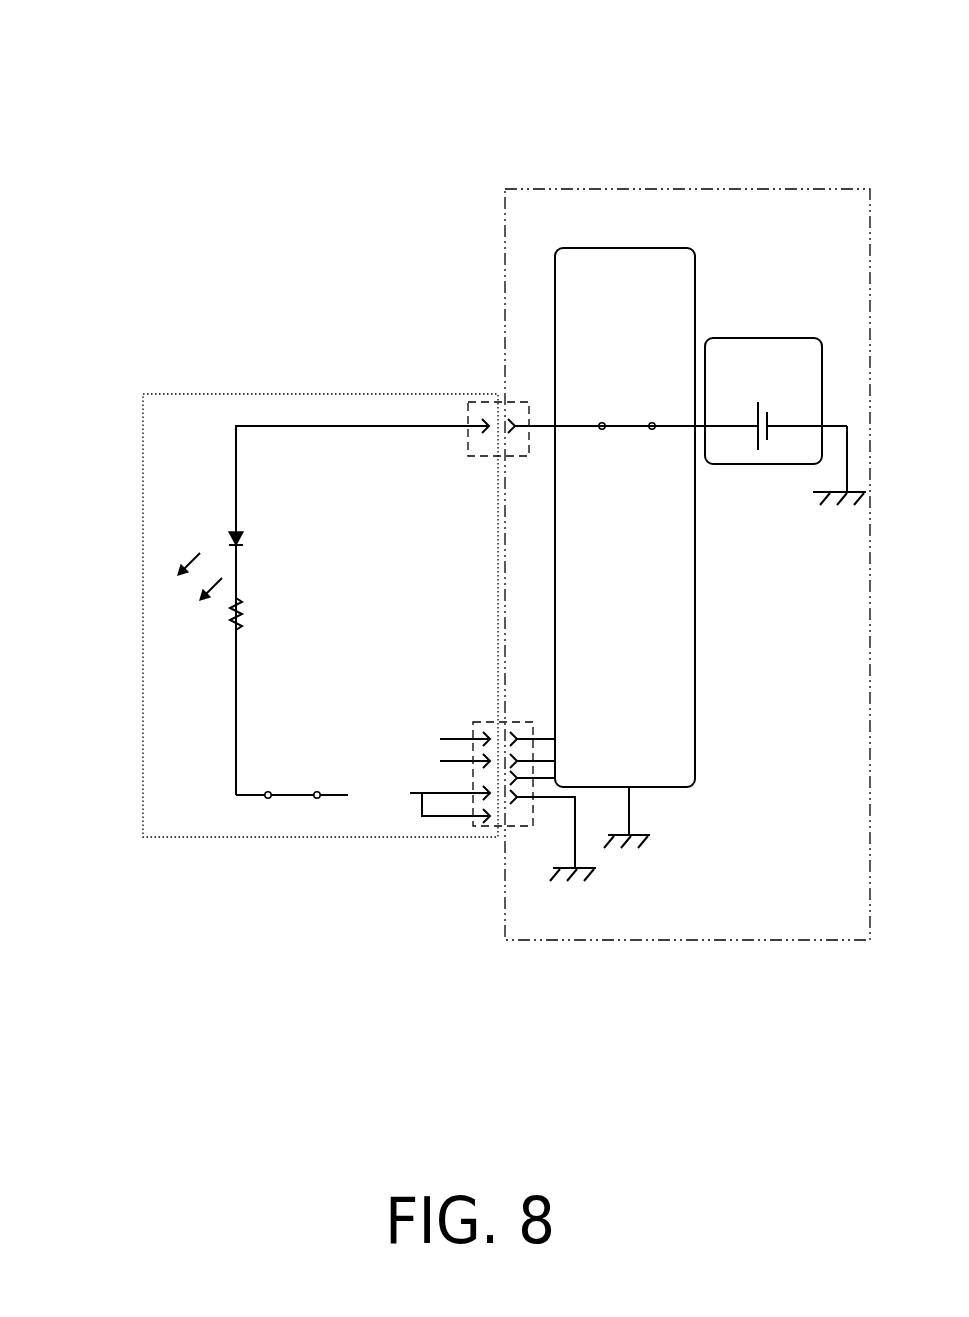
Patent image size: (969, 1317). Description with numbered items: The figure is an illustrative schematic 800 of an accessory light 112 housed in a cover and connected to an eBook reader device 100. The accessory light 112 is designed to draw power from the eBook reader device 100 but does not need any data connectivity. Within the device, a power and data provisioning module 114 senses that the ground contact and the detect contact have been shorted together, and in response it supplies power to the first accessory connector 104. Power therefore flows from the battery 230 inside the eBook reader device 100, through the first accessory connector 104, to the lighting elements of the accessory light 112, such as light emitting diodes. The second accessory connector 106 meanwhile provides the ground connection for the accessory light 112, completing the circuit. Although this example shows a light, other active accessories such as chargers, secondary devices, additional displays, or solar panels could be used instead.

The illustrative schematic 800 is at (788, 34).
The eBook reader device 100 is at (760, 940).
The first accessory connector 104 is at (488, 402).
The second accessory connector 106 is at (485, 826).
The accessory light 112 is at (208, 394).
The power and data provisioning module 114 is at (640, 381).
The battery 230 is at (780, 392).